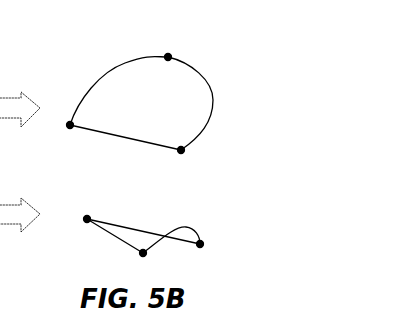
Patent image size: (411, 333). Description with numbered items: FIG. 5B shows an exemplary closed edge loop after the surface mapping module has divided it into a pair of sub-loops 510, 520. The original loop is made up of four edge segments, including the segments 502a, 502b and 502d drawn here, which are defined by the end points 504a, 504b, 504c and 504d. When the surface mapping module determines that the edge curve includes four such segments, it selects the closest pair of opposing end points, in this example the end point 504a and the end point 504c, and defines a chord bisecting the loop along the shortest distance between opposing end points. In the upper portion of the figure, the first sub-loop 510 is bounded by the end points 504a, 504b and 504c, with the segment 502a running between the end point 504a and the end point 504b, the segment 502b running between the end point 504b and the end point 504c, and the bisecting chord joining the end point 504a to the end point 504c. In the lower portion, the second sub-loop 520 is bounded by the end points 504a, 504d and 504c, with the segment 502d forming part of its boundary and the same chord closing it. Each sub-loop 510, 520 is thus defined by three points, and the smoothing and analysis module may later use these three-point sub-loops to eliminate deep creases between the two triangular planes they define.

The sub-loop 510 is at (290, 31).
The sub-loop 520 is at (255, 195).
The edge segment 502a is at (97, 87).
The edge segment 502b is at (213, 96).
The edge segment 502d is at (100, 228).
The end point 504a is at (71, 128).
The end point 504b is at (168, 55).
The end point 504c is at (181, 150).
The end point 504d is at (143, 255).